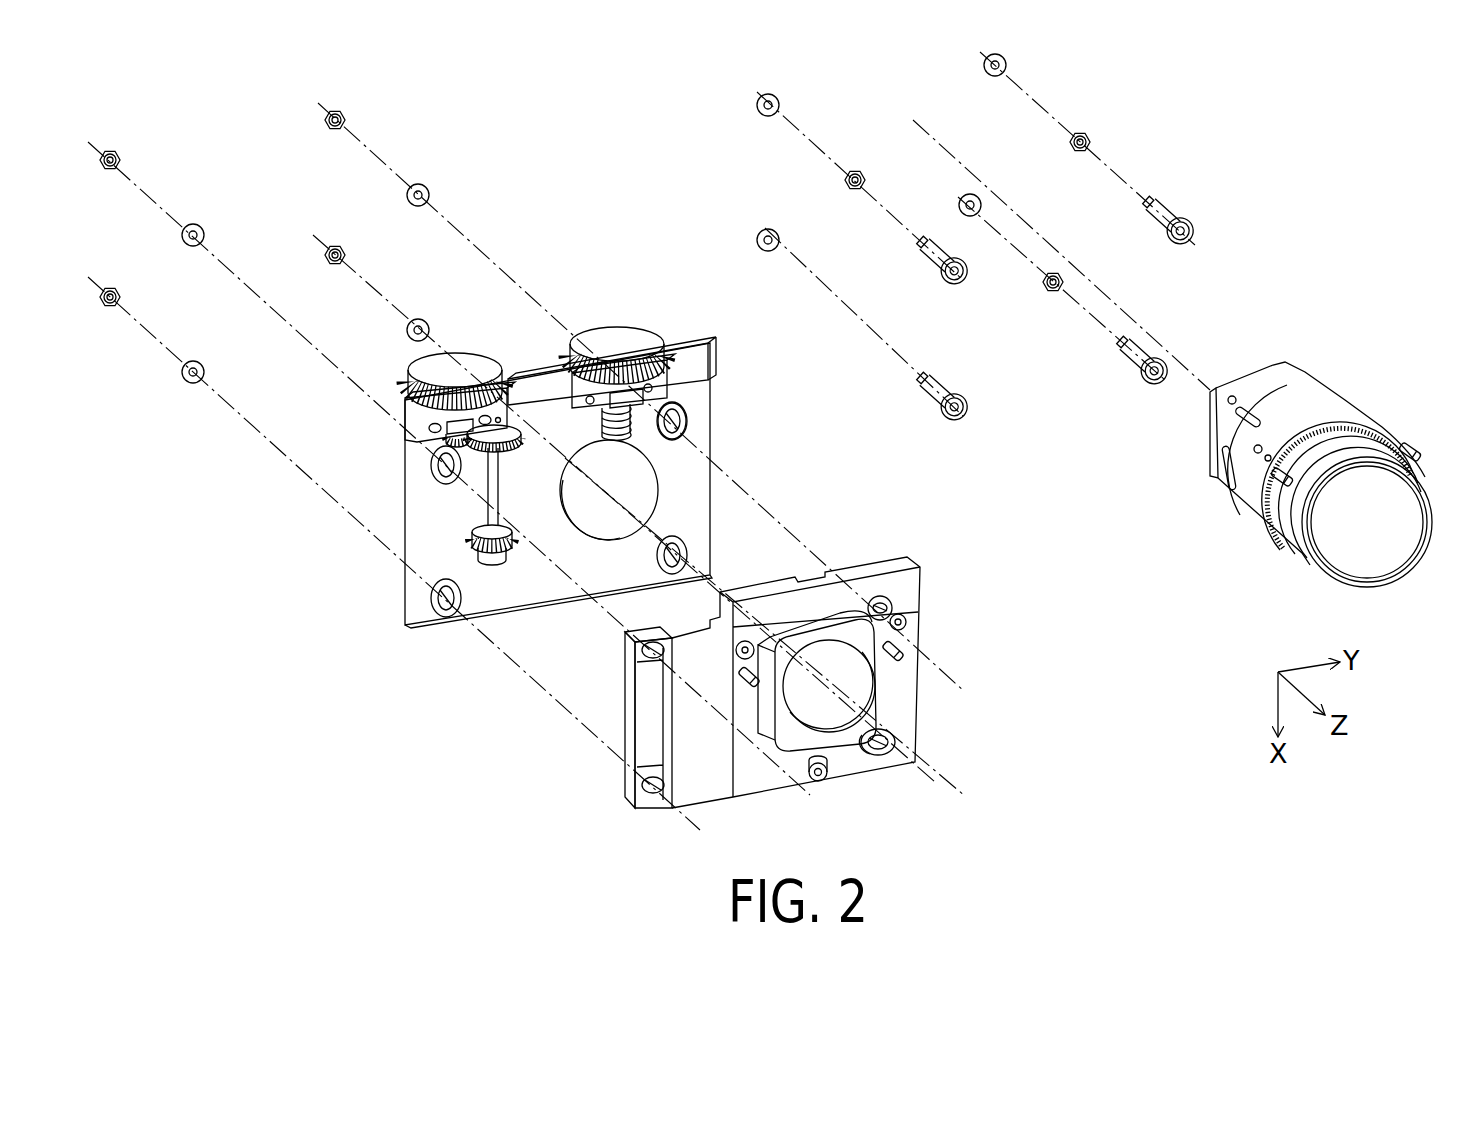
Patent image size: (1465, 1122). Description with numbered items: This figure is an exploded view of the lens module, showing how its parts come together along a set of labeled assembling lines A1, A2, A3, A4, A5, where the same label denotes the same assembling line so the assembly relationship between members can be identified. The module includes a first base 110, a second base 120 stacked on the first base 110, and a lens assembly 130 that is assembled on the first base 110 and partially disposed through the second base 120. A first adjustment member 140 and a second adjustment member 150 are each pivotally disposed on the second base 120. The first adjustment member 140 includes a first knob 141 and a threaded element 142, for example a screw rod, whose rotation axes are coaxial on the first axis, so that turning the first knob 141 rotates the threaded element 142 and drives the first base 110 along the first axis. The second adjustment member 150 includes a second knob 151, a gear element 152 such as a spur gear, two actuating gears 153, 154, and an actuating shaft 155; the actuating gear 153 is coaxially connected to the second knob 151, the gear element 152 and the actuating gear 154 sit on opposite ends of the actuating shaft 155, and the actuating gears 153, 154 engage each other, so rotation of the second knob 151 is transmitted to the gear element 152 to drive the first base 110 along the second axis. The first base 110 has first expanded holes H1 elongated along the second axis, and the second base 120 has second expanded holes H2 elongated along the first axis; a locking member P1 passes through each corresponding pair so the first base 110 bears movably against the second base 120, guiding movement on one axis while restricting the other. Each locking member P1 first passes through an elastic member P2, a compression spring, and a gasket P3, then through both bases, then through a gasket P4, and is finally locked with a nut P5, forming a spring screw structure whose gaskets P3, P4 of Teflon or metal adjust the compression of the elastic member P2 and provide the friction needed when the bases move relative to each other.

The first base 110 is at (627, 790).
The second base 120 is at (410, 627).
The lens assembly 130 is at (1347, 403).
The first adjustment member 140 is at (983, 237).
The first knob 141 is at (643, 328).
The threaded element 142 is at (670, 398).
The second adjustment member 150 is at (830, 324).
The second knob 151 is at (488, 353).
The gear element 152 is at (478, 543).
The actuating gear 153 is at (440, 438).
The actuating gear 154 is at (522, 430).
The actuating shaft 155 is at (487, 507).
The assembling line A1 is at (913, 120).
The assembling line A2 is at (979, 51).
The assembling line A3 is at (958, 197).
The assembling line A4 is at (767, 92).
The assembling line A5 is at (773, 227).
The locking member P1 is at (1170, 212).
The elastic member P2 is at (1092, 140).
The gasket P3 is at (1007, 66).
The gasket P4 is at (428, 188).
The nut P5 is at (340, 113).
The first expanded hole H1 is at (888, 604).
The second expanded hole H2 is at (684, 419).